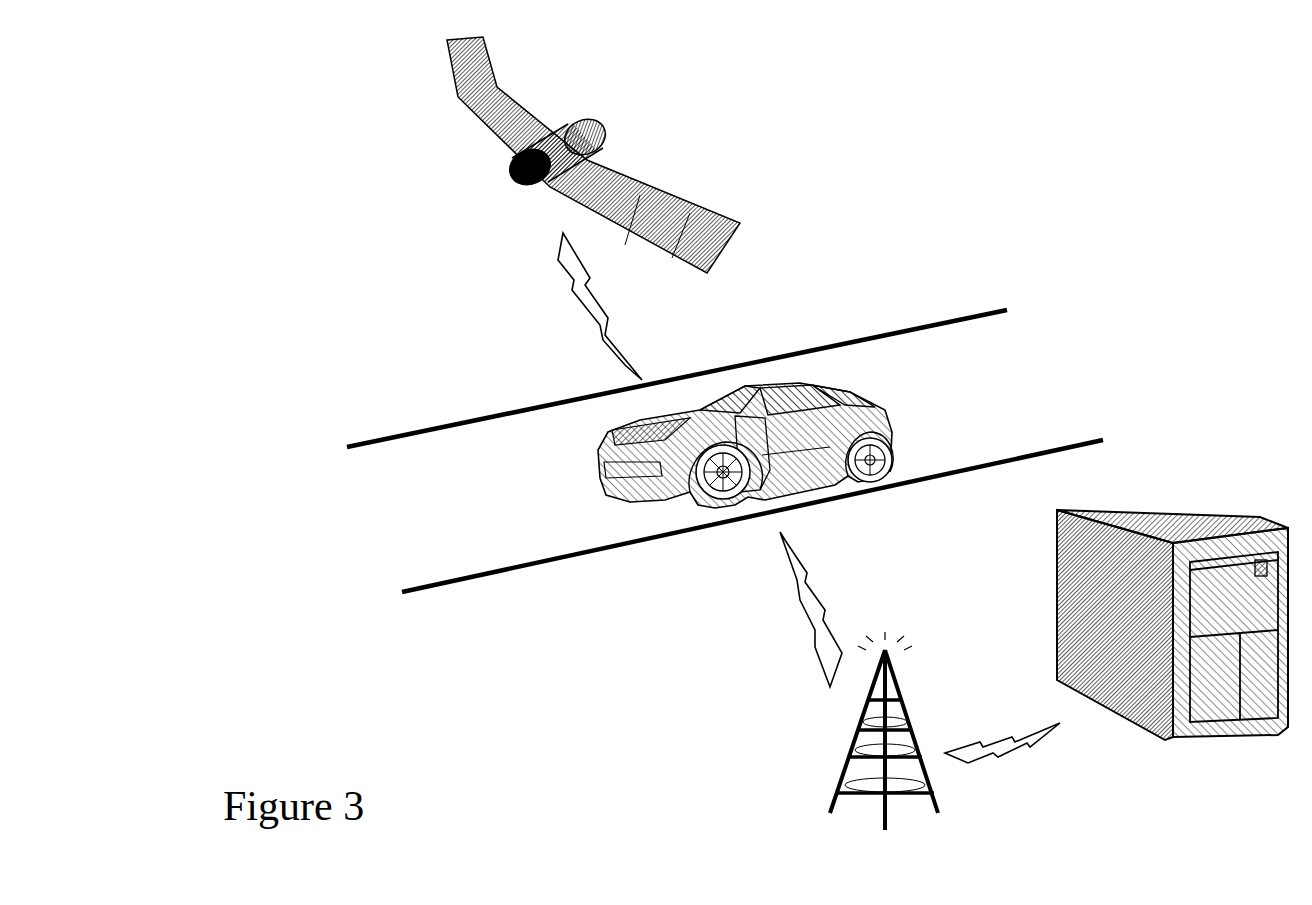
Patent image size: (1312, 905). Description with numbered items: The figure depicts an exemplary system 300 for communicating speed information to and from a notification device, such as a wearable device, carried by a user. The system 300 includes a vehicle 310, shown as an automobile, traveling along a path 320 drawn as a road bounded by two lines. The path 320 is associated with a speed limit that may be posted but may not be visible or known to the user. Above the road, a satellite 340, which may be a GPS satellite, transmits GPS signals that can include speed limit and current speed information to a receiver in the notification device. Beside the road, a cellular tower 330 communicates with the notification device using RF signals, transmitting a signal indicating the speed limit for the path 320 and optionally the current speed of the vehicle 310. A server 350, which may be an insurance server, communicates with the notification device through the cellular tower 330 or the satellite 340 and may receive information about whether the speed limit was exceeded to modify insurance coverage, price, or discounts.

The system 300 is at (344, 172).
The vehicle 310 is at (607, 487).
The path 320 is at (1040, 362).
The cellular tower 330 is at (822, 802).
The satellite 340 is at (697, 198).
The server 350 is at (1148, 760).